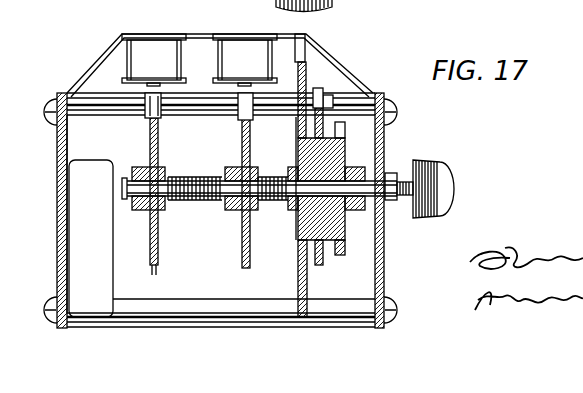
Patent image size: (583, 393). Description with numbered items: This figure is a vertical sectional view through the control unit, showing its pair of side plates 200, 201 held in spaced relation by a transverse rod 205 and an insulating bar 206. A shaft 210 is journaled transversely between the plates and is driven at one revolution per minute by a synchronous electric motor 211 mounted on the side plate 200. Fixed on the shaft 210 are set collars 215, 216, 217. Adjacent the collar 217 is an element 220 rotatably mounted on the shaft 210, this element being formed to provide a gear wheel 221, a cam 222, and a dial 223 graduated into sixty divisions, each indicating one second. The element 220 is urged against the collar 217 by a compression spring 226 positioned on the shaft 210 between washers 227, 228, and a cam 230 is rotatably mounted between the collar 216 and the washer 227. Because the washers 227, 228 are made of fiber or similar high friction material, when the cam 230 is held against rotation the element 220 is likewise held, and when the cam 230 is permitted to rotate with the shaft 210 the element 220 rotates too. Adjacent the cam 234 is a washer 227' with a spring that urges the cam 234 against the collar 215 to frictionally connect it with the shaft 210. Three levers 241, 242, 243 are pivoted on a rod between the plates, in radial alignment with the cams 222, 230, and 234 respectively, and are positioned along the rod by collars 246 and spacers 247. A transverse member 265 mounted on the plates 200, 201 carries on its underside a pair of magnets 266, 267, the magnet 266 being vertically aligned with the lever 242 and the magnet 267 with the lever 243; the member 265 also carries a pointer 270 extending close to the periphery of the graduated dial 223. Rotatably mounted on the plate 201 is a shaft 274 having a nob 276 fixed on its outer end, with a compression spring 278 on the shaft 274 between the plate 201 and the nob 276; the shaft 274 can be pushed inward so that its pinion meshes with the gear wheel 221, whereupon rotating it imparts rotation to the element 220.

The side plate 200 is at (57, 133).
The side plate 201 is at (384, 138).
The transverse rod 205 is at (225, 316).
The bar 206 is at (100, 113).
The shaft 210 is at (135, 194).
The synchronous electric motor 211 is at (57, 213).
The set collar 215 is at (141, 215).
The set collar 216 is at (228, 210).
The set collar 217 is at (358, 210).
The element 220 is at (337, 158).
The gear wheel 221 is at (343, 123).
The cam 222 is at (318, 266).
The dial 223 is at (299, 282).
The compression spring 226 is at (187, 212).
The washer 227 is at (276, 177).
The washer 227' is at (168, 176).
The washer 228 is at (289, 150).
The cam 230 is at (242, 260).
The cam 234 is at (153, 272).
The lever 241 is at (318, 97).
The lever 242 is at (240, 106).
The lever 243 is at (150, 112).
The collar 246 is at (140, 97).
The spacer 247 is at (191, 100).
The transverse member 265 is at (113, 45).
The magnet 266 is at (233, 45).
The magnet 267 is at (143, 45).
The pointer 270 is at (302, 42).
The shaft 274 is at (401, 205).
The nob 276 is at (447, 184).
The compression spring 278 is at (405, 170).